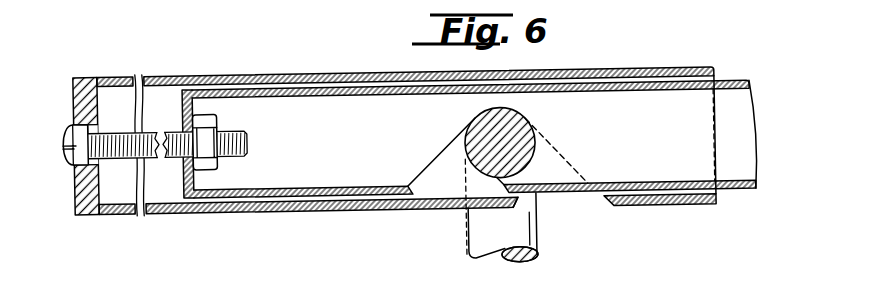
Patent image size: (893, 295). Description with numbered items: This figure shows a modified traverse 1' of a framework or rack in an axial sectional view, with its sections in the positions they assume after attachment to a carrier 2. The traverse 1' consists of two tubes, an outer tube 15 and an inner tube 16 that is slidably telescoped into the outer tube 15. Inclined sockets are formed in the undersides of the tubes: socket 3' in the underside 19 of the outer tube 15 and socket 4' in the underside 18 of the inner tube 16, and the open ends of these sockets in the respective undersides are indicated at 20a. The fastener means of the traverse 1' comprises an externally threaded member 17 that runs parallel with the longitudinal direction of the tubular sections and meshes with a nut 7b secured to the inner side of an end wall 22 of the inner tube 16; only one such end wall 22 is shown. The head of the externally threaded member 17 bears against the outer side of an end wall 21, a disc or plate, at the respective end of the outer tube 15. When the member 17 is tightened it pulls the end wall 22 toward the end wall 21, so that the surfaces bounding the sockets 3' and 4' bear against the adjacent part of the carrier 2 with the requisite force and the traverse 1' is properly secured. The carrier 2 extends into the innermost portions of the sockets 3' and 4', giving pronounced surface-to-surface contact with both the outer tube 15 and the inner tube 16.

The modified traverse 1' is at (663, 37).
The outer tube 15 is at (161, 79).
The inner tube 16 is at (347, 96).
The externally threaded member 17 is at (125, 159).
The underside of inner tube 18 is at (327, 196).
The underside of outer tube 19 is at (267, 213).
The end wall of outer section 21 is at (85, 96).
The end wall of inner tube 22 is at (193, 114).
The nut 7b is at (217, 166).
The carrier 2 is at (478, 242).
The socket 4' is at (442, 180).
The socket 3' is at (563, 175).
The open end of socket 20a is at (564, 222).